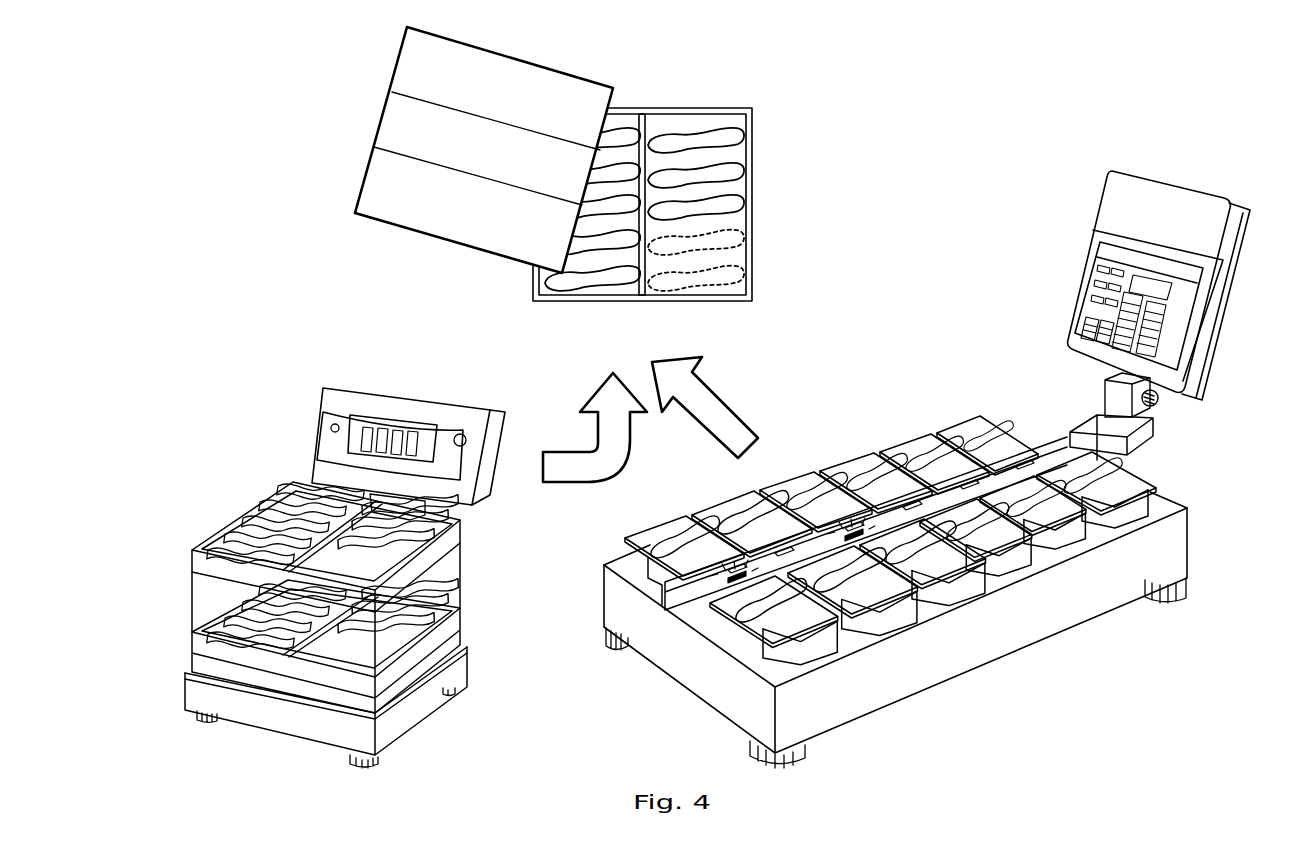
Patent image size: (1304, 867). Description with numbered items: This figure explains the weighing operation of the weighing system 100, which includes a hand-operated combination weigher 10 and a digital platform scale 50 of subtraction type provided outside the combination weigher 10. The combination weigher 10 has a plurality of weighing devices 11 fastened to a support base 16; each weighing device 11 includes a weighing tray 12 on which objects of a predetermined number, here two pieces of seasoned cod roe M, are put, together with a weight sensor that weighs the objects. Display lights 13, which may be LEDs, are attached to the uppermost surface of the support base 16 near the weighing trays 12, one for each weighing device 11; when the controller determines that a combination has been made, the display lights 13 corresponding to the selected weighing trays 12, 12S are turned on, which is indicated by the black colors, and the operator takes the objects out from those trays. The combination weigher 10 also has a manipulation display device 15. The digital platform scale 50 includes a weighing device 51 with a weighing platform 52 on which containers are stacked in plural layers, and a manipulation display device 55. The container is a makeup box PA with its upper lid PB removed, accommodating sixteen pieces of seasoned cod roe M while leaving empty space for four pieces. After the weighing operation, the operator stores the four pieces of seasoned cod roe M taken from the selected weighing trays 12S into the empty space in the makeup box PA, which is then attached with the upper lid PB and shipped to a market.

The weighing system 100 is at (960, 159).
The combination weigher 10 is at (1193, 167).
The weighing device 11 is at (1154, 487).
The weighing tray 12 is at (938, 573).
The weighing tray 12S is at (767, 487).
The display light 13 is at (1053, 440).
The manipulation display device 15 is at (1248, 208).
The support base 16 is at (1190, 541).
The digital platform scale 50 is at (377, 540).
The weighing device 51 is at (475, 637).
The weighing platform 52 is at (467, 657).
The manipulation display device 55 is at (496, 408).
The seasoned cod roe M is at (733, 122).
The makeup box PA is at (544, 329).
The upper lid PB is at (575, 77).